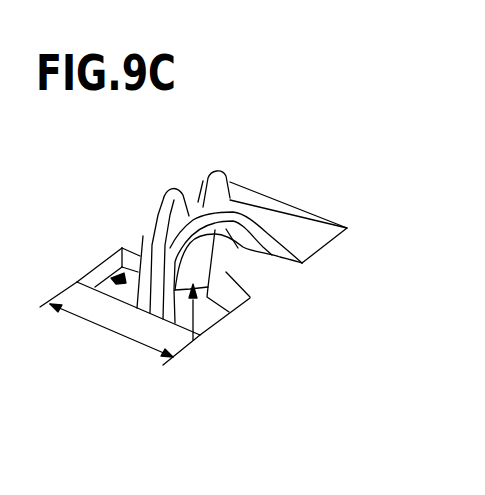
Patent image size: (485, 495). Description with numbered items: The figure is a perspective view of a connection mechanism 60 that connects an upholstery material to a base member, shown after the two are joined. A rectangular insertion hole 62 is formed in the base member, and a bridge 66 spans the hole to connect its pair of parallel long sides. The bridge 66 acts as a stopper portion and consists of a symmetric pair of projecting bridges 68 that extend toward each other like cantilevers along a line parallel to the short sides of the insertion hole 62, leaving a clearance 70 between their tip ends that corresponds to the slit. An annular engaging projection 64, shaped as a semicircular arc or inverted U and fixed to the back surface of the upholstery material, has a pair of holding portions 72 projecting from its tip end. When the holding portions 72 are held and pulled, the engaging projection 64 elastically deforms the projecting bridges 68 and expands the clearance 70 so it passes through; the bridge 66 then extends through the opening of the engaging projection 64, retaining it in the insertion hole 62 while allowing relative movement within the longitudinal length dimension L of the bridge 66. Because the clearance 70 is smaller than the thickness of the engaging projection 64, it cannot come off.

The connection mechanism 60 is at (304, 157).
The insertion hole 62 is at (303, 222).
The engaging projection 64 is at (260, 205).
The bridge 66 is at (76, 281).
The projecting bridges 68 is at (143, 238).
The clearance 70 is at (193, 300).
The holding portions 72 is at (158, 199).